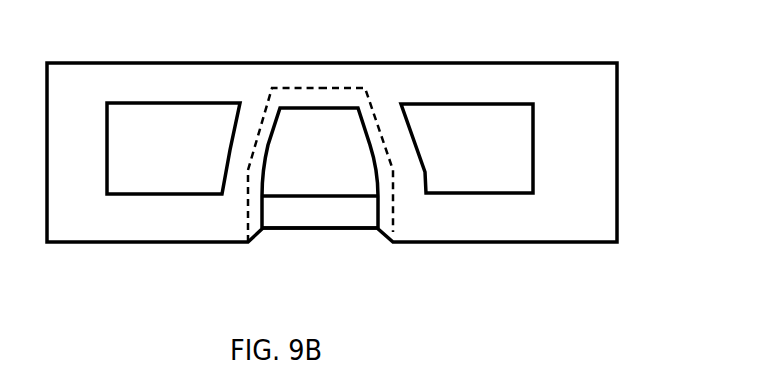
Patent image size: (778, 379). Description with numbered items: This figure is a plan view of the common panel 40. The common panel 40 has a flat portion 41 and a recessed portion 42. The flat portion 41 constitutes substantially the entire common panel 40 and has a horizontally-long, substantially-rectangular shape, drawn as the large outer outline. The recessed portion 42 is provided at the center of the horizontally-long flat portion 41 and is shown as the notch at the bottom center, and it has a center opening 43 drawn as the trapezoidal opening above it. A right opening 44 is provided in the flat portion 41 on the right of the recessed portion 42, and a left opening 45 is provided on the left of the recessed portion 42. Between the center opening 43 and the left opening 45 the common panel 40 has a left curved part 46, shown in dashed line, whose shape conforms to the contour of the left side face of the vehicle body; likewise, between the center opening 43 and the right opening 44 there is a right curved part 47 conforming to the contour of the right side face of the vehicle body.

The common panel 40 is at (585, 83).
The flat portion 41 is at (578, 188).
The recessed portion 42 is at (346, 243).
The center opening 43 is at (323, 187).
The right opening 44 is at (492, 174).
The left opening 45 is at (157, 175).
The left curved part 46 is at (248, 135).
The right curved part 47 is at (395, 132).